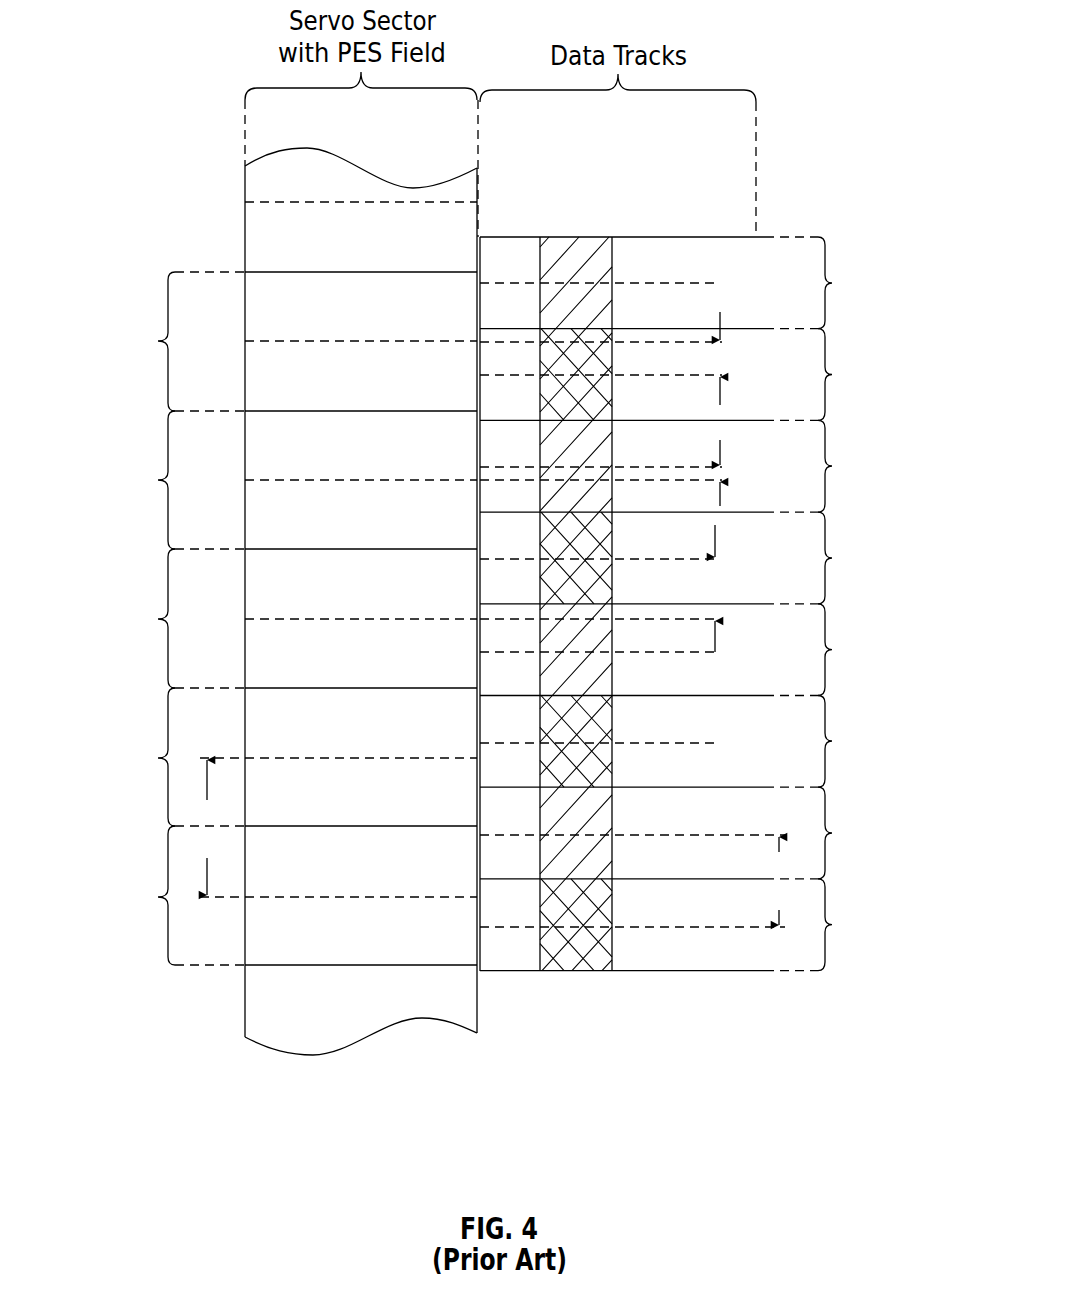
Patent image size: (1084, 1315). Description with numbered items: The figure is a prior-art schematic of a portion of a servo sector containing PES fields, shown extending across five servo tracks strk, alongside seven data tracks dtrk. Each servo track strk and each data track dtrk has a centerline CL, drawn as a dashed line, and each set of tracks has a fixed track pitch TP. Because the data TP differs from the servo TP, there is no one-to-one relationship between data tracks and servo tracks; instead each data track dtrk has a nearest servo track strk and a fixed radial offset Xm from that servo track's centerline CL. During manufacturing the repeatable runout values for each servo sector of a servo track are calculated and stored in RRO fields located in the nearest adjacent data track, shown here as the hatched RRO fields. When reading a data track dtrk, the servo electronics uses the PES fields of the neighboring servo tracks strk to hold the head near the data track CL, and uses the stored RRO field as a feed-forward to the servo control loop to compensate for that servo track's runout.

The centerline CL is at (523, 586).
The RRO field RRO is at (475, 604).
The servo track strk is at (136, 618).
The data track dtrk is at (860, 604).
The radial offset distance Xm is at (765, 482).
The track pitch TP is at (491, 842).